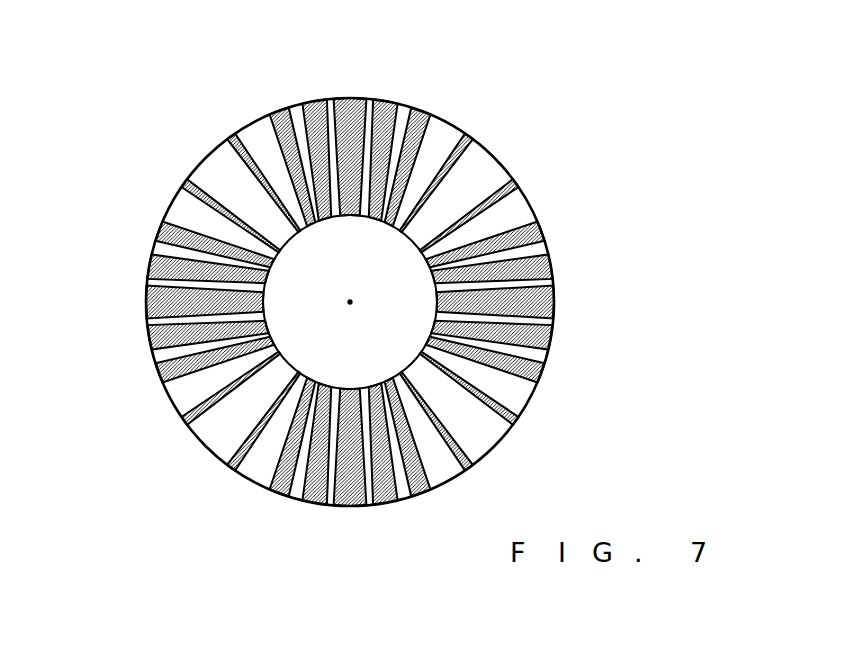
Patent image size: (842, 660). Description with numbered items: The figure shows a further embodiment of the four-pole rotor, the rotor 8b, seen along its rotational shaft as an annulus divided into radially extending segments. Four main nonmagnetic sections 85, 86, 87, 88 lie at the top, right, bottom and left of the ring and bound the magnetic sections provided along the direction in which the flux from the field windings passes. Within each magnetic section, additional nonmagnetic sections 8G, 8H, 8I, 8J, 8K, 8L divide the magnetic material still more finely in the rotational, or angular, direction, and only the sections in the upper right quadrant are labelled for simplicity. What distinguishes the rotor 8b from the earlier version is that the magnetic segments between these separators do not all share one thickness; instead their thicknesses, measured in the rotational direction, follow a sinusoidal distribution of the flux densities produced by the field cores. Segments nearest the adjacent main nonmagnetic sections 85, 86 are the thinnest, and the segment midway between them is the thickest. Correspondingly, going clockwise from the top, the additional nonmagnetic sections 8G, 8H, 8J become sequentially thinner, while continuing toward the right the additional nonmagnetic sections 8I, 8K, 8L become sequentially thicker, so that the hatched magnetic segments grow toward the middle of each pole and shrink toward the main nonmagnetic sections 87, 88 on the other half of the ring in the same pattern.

The rotor 8b is at (348, 305).
The main nonmagnetic section 85 is at (355, 112).
The main nonmagnetic section 86 is at (532, 305).
The main nonmagnetic section 87 is at (352, 490).
The main nonmagnetic section 88 is at (172, 304).
The additional nonmagnetic section 8G is at (386, 110).
The additional nonmagnetic section 8H is at (425, 110).
The additional nonmagnetic section 8I is at (508, 189).
The additional nonmagnetic section 8J is at (467, 139).
The additional nonmagnetic section 8K is at (534, 233).
The additional nonmagnetic section 8L is at (532, 268).